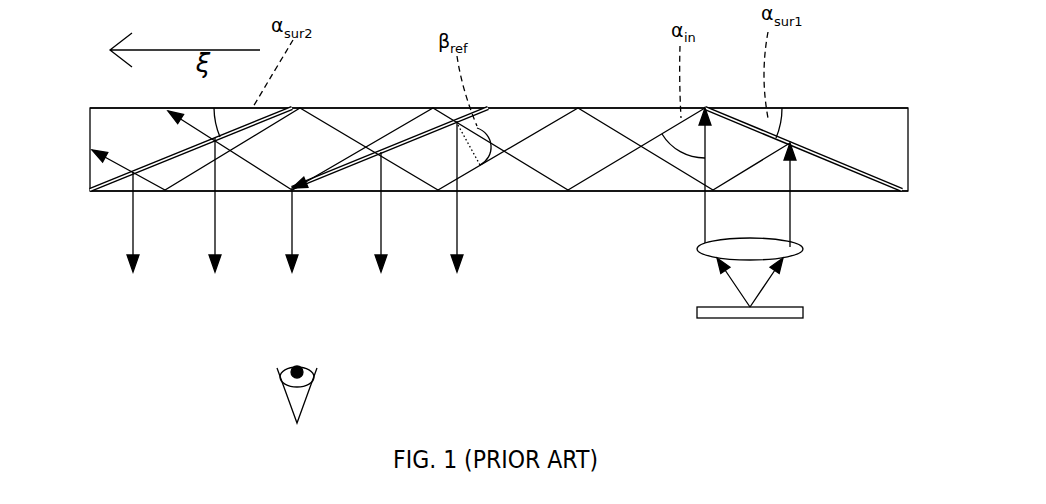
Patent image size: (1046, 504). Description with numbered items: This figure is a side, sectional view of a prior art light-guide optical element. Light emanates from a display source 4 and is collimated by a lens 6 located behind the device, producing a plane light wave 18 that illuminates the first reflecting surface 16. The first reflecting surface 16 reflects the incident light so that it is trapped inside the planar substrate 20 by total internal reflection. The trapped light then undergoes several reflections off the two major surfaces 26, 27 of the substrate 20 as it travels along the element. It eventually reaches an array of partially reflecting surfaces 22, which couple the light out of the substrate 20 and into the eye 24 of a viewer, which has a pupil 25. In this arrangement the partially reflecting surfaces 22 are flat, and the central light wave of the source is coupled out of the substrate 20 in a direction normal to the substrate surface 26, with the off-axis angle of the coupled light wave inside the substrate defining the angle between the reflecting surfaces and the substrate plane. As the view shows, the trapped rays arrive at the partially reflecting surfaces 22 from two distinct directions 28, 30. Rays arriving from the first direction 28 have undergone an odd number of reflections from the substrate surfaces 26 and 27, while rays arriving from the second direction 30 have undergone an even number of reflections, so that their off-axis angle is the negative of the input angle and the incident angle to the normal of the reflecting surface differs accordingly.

The display source 4 is at (780, 313).
The lens 6 is at (765, 247).
The first reflecting surface 16 is at (843, 155).
The plane light wave 18 is at (765, 203).
The planar substrate 20 is at (793, 128).
The partially reflecting surfaces 22 is at (450, 108).
The eye 24 is at (307, 395).
The pupil 25 is at (295, 365).
The major surface 26 is at (513, 193).
The major surface 27 is at (507, 108).
The first direction 28 is at (556, 118).
The second direction 30 is at (655, 158).